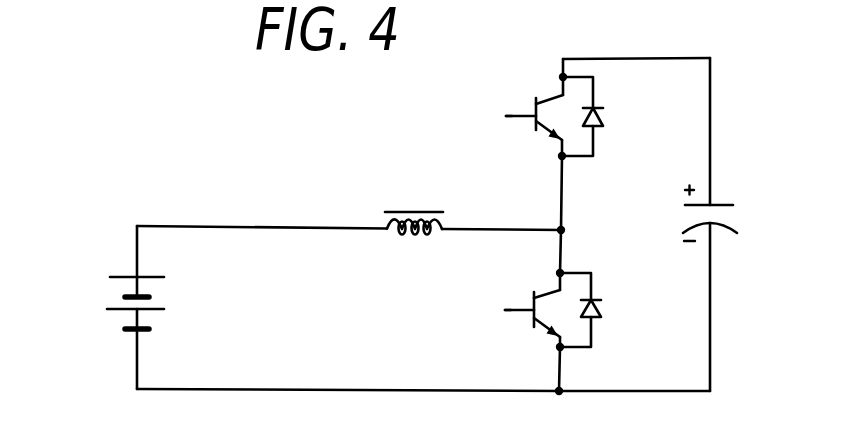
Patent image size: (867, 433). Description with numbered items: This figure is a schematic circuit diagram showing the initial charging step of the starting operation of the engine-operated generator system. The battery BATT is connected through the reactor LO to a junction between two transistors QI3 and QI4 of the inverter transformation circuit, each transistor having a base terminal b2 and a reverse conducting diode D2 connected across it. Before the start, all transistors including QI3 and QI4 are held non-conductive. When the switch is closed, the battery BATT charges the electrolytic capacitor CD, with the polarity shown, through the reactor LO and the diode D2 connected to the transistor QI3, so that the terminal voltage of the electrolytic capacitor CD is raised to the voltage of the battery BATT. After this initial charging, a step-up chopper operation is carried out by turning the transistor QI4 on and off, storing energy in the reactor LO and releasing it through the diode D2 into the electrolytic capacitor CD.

The battery BATT is at (96, 303).
The reactor LO is at (414, 206).
The transistor QI3 is at (514, 110).
The transistor QI4 is at (515, 317).
The transistor base terminal b2 is at (515, 213).
The diode D2 is at (603, 117).
The electrolytic capacitor CD is at (729, 224).